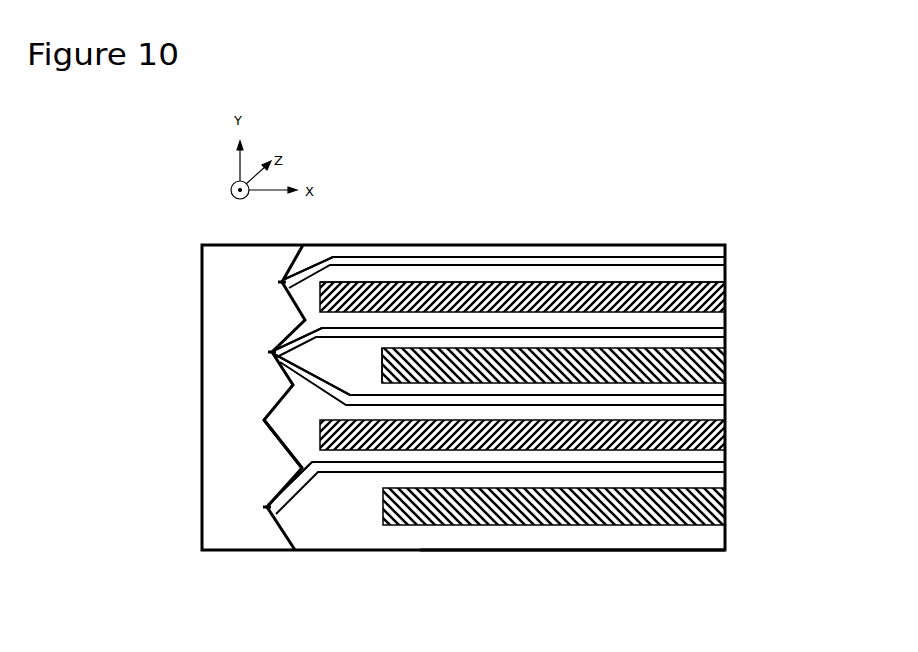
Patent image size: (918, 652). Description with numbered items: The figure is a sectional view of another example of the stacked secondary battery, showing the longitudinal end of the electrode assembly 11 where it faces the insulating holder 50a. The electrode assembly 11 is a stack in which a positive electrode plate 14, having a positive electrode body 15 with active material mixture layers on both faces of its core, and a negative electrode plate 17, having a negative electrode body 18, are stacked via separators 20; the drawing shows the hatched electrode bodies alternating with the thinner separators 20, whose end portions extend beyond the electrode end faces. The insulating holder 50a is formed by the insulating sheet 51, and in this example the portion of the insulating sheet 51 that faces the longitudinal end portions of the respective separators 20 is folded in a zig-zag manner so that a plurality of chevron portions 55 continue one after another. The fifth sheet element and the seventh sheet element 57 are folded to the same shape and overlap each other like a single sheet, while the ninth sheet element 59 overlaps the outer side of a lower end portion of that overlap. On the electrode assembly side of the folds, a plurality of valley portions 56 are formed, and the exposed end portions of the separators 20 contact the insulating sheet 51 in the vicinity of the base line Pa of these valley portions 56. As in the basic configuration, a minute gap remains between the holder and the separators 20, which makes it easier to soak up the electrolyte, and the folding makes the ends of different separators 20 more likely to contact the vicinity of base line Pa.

The electrode assembly 11 is at (620, 525).
The positive electrode plate 14 is at (728, 361).
The positive electrode body 15 is at (381, 364).
The negative electrode plate 17 is at (728, 296).
The negative electrode body 18 is at (434, 281).
The separator 20 is at (536, 258).
The insulating holder 50a is at (482, 552).
The insulating sheet 51 is at (555, 552).
The chevron portion 55 is at (283, 282).
The valley portion 56 is at (320, 262).
The seventh sheet element 57 is at (278, 441).
The ninth sheet element 59 is at (237, 530).
The base line Pa is at (282, 283).